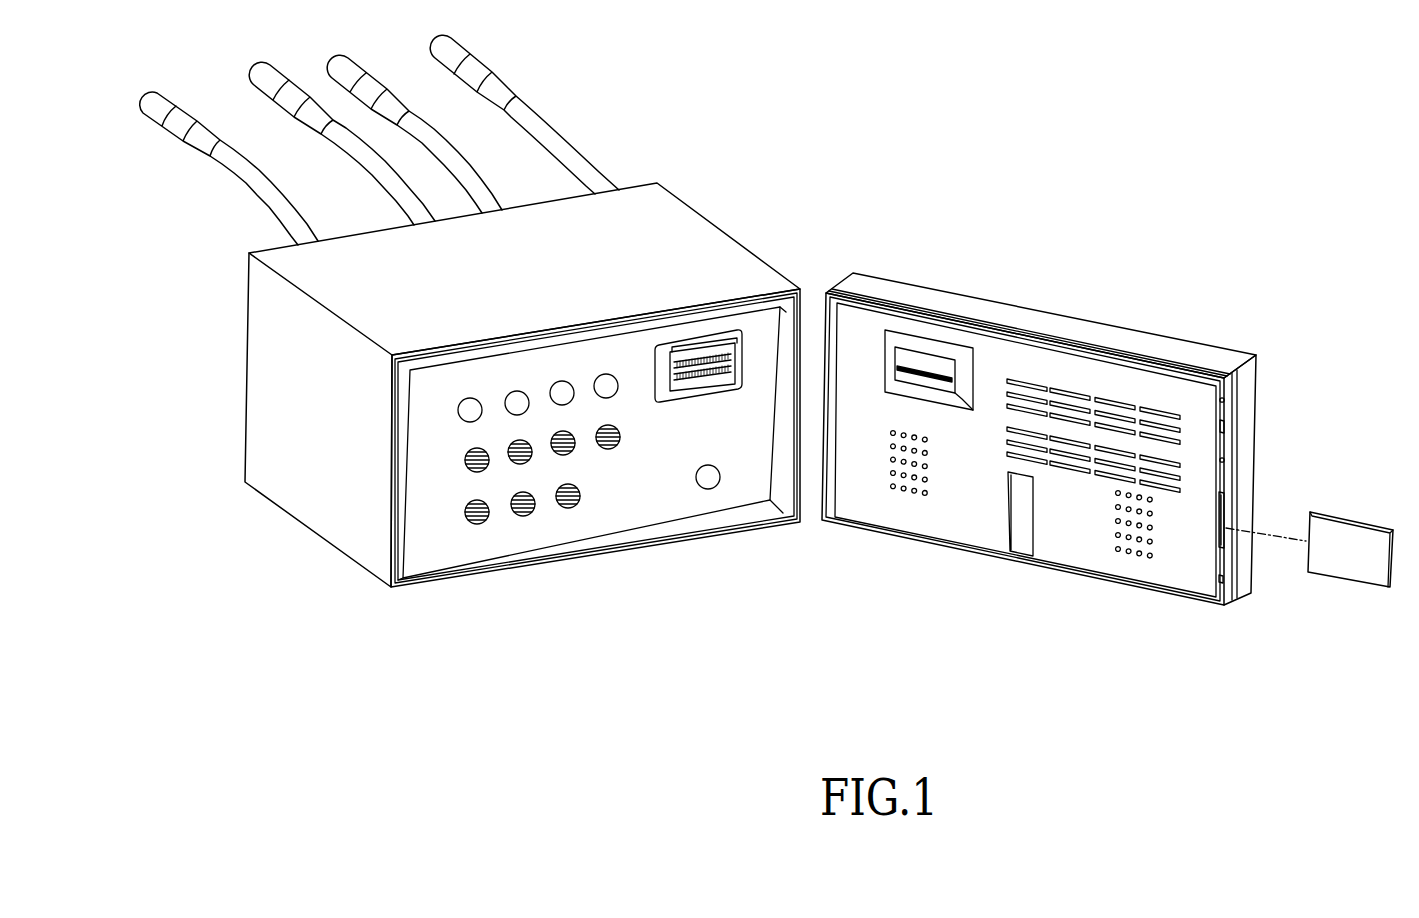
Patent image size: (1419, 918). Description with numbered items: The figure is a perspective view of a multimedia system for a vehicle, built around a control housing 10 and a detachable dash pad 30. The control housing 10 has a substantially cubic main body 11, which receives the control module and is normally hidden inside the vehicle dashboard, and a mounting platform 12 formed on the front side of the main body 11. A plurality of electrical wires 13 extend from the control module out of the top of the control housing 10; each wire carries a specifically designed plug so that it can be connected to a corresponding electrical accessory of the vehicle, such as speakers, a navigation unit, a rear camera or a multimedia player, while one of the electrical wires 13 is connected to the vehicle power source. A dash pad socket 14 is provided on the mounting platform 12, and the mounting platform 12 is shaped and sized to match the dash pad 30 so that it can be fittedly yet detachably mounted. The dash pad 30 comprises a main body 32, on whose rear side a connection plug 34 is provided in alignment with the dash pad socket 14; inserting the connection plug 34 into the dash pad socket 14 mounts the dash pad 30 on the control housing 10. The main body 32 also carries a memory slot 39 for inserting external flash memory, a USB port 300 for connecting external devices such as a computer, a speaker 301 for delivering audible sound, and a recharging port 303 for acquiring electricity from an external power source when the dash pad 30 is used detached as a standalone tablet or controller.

The control housing 10 is at (638, 144).
The main body 11 is at (673, 237).
The mounting platform 12 is at (627, 503).
The electrical wires 13 is at (553, 130).
The dash pad socket 14 is at (708, 355).
The dash pad 30 is at (1110, 301).
The main body 32 is at (975, 310).
The connection plug 34 is at (910, 360).
The memory slot 39 is at (1223, 520).
The USB port 300 is at (1232, 410).
The speaker 301 is at (1137, 556).
The recharging port 303 is at (1232, 450).